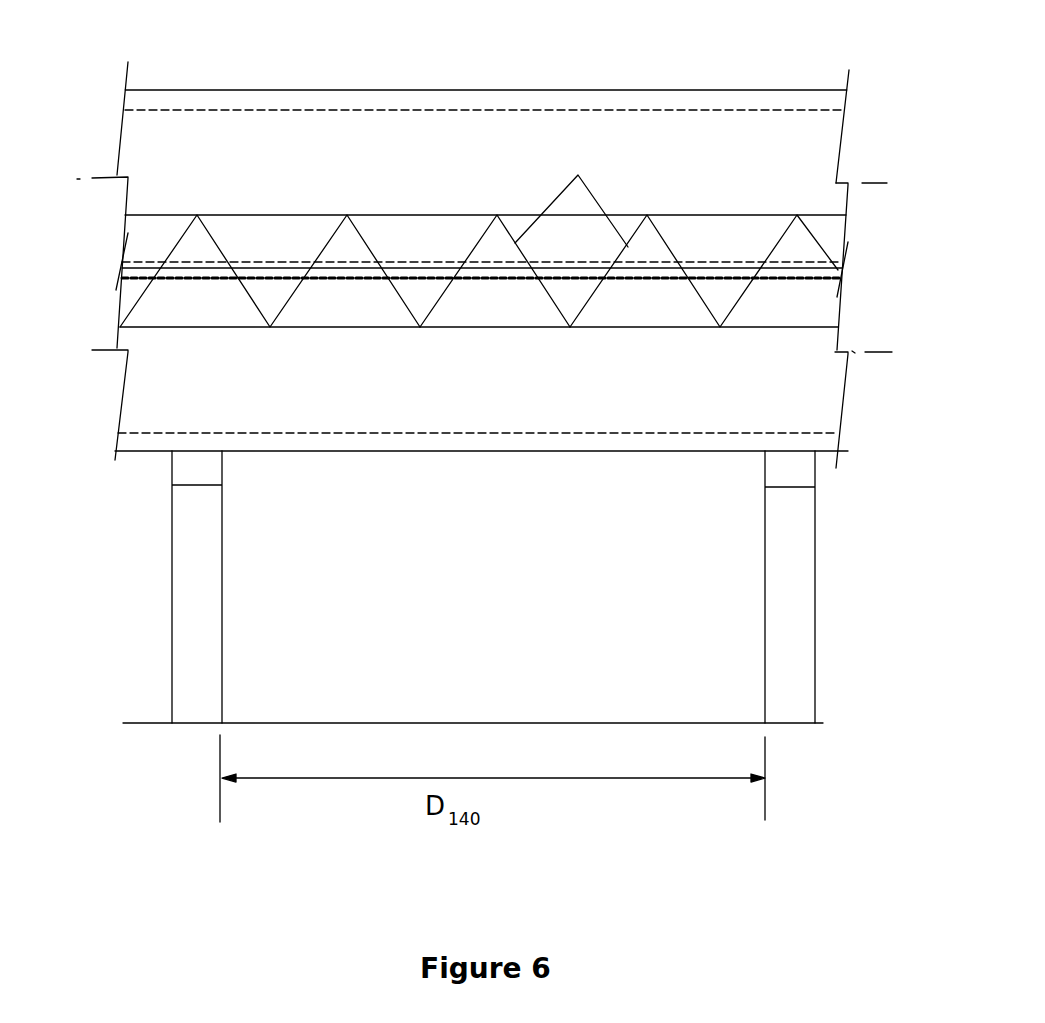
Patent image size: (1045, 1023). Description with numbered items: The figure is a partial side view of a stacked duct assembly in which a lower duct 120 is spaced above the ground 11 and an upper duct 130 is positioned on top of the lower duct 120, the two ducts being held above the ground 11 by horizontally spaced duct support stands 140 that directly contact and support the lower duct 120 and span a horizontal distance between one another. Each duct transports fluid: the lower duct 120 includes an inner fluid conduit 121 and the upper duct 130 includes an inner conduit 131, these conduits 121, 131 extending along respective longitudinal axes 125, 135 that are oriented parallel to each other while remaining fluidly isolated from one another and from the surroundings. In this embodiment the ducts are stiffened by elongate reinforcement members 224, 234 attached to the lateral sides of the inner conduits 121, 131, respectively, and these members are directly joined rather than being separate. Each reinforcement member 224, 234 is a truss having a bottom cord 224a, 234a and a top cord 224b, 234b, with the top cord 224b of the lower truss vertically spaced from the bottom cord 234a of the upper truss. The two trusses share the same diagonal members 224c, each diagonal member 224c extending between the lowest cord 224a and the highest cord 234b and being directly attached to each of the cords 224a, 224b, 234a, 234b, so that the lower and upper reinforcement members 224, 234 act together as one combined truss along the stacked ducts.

The ground 11 is at (495, 722).
The lower duct 120 is at (437, 452).
The inner fluid conduit 121 is at (285, 433).
The central or longitudinal axis 125 is at (875, 350).
The upper duct 130 is at (400, 90).
The inner conduit 131 is at (562, 110).
The central or longitudinal axis 135 is at (95, 178).
The duct support stand 140 is at (233, 537).
The elongate reinforcement member 224 is at (355, 328).
The bottom cord 224a is at (613, 330).
The top cord 224b is at (468, 278).
The diagonal member 224c is at (571, 199).
The elongate reinforcement member 234 is at (263, 214).
The bottom cord 234a is at (440, 263).
The top cord 234b is at (680, 217).